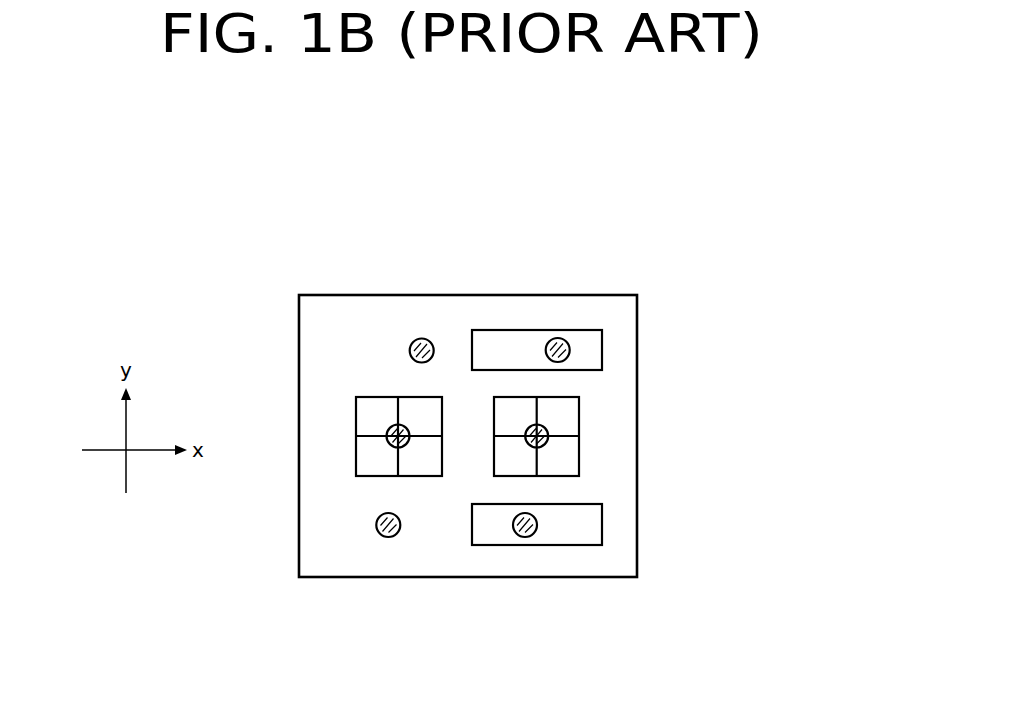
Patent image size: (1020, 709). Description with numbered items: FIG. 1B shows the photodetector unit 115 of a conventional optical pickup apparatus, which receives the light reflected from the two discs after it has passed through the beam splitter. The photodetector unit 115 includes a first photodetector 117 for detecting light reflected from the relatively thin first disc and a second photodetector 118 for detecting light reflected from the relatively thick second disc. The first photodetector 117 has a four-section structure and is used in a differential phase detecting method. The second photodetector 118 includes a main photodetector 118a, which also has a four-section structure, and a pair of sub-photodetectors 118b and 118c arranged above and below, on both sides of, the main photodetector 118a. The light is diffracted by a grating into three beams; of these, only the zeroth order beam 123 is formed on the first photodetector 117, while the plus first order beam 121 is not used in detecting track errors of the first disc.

The photodetector unit 115 is at (662, 293).
The first photodetector 117 is at (367, 460).
The second photodetector 118 is at (737, 350).
The main photodetector 118a is at (570, 422).
The sub-photodetector 118b is at (592, 523).
The sub-photodetector 118c is at (593, 347).
The +1st order beam 121 is at (423, 338).
The 0th order beam 123 is at (396, 435).